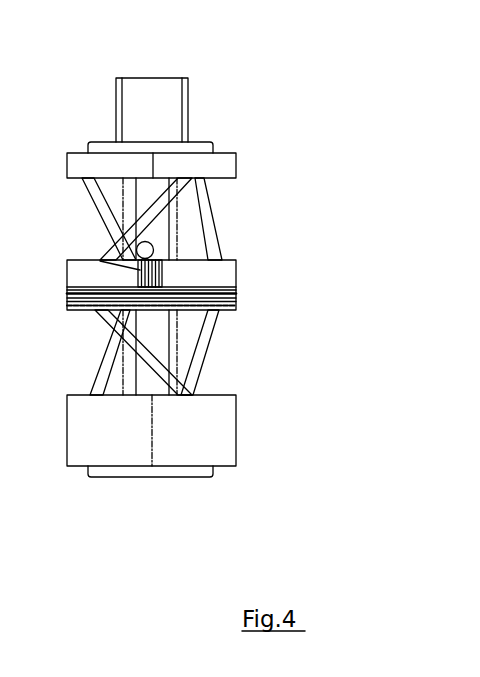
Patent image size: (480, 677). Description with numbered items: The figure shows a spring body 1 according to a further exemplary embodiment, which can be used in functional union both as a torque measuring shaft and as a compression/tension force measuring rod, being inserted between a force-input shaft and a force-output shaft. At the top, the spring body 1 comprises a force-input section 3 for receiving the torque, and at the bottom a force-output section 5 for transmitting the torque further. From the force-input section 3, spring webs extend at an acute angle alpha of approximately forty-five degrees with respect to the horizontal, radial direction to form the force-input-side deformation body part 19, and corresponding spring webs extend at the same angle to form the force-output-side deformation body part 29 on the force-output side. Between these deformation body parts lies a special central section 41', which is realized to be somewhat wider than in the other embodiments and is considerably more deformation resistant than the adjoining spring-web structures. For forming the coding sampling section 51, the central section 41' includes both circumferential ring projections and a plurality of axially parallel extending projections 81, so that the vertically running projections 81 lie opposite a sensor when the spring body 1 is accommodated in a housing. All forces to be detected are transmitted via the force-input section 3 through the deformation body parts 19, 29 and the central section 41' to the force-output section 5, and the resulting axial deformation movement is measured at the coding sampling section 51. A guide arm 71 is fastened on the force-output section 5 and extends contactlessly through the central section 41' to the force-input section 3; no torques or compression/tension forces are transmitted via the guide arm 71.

The spring body 1 is at (243, 114).
The force-input section 3 is at (72, 149).
The force-input-side deformation body part 19 is at (208, 212).
The guide arm 71 is at (157, 250).
The axially parallel extending projections 81 is at (138, 275).
The coding sampling section 51 is at (64, 314).
The central section 41' is at (199, 284).
The force-output-side deformation body part 29 is at (208, 358).
The force-output section 5 is at (82, 468).